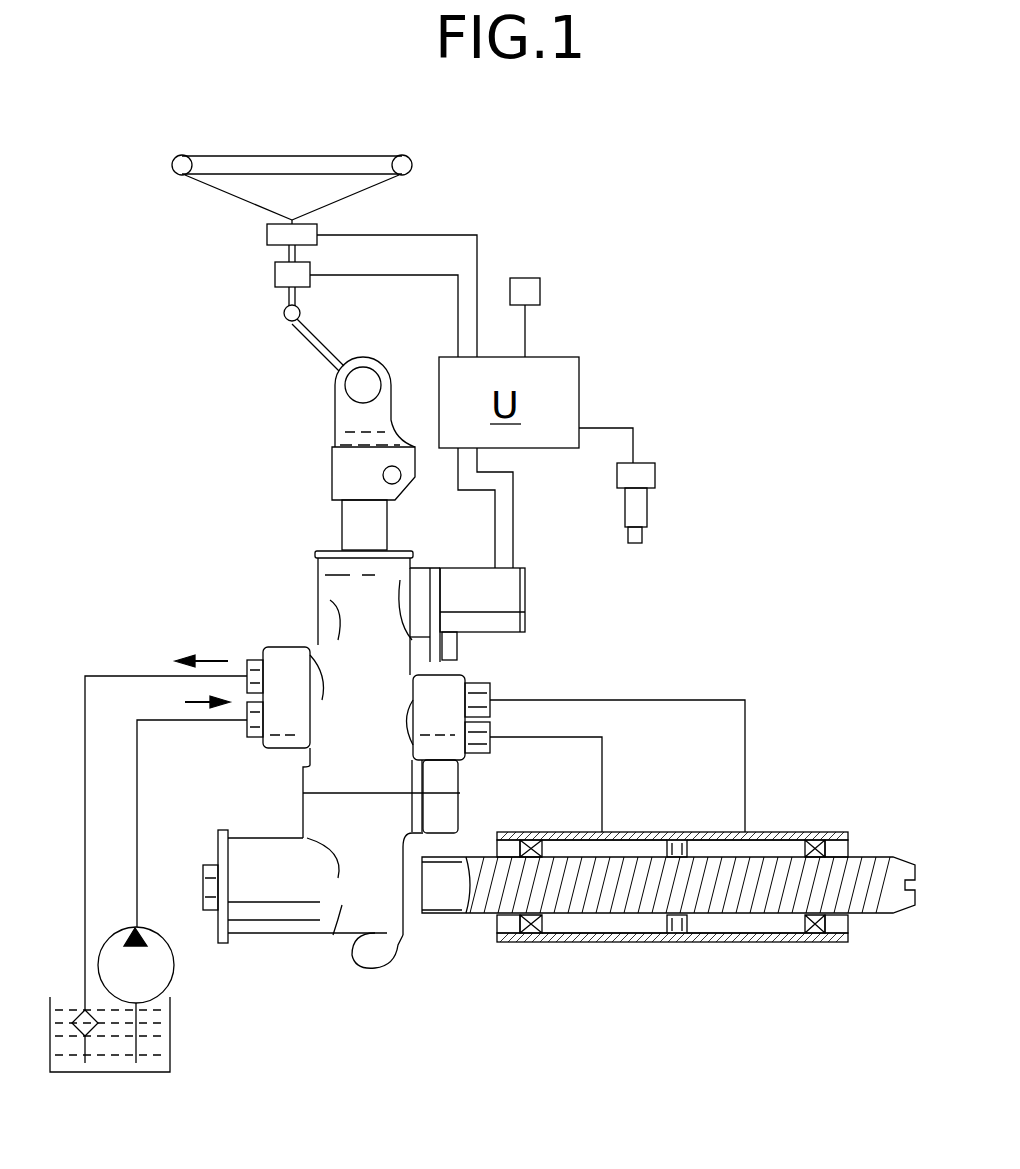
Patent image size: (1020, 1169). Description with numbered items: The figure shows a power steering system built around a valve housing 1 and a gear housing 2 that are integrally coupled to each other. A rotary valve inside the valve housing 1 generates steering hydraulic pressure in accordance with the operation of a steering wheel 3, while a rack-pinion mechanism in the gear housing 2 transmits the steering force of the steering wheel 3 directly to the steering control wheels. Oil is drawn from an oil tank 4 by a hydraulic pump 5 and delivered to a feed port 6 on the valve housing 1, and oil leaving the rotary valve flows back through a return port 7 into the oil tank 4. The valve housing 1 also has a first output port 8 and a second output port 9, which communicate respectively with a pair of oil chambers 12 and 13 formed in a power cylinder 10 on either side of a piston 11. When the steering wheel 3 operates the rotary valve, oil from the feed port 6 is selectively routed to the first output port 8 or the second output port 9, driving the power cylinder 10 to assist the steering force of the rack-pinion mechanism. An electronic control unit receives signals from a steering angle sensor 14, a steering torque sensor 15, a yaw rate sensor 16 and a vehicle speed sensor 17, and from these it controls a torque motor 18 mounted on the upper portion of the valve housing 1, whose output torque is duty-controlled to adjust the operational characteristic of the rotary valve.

The valve housing 1 is at (322, 590).
The gear housing 2 is at (305, 820).
The steering wheel 3 is at (409, 162).
The oil tank 4 is at (172, 1023).
The hydraulic pump 5 is at (150, 930).
The feed port 6 is at (258, 745).
The return port 7 is at (255, 660).
The first output port 8 is at (480, 683).
The second output port 9 is at (478, 755).
The power cylinder 10 is at (652, 830).
The piston 11 is at (677, 934).
The oil chamber 12 is at (752, 934).
The oil chamber 13 is at (592, 932).
The steering angle sensor 14 is at (267, 235).
The steering torque sensor 15 is at (278, 275).
The yaw rate sensor 16 is at (540, 292).
The vehicle speed sensor 17 is at (647, 507).
The torque motor 18 is at (525, 598).